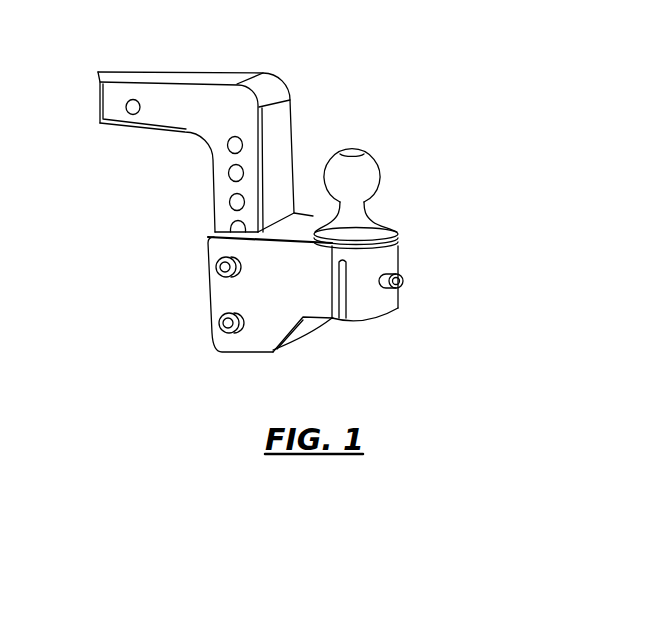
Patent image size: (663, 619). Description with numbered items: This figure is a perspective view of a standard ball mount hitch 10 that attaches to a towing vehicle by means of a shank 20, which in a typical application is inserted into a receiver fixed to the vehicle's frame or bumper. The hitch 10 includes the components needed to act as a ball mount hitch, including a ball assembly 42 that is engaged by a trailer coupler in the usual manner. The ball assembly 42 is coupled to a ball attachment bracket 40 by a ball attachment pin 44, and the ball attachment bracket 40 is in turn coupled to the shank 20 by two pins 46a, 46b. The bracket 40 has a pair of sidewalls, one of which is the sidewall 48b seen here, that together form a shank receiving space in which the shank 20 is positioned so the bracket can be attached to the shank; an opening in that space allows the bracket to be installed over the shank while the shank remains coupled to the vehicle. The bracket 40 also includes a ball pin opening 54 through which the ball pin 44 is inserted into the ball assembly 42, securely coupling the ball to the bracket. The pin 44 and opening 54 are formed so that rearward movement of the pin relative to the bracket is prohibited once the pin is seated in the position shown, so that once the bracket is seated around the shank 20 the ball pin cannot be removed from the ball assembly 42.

The ball mount hitch 10 is at (414, 116).
The shank 20 is at (209, 66).
The ball attachment bracket 40 is at (302, 288).
The ball assembly 42 is at (357, 213).
The ball attachment pin 44 is at (401, 281).
The pin 46a is at (222, 265).
The pin 46b is at (225, 323).
The sidewall 48b is at (273, 308).
The ball pin opening 54 is at (394, 299).